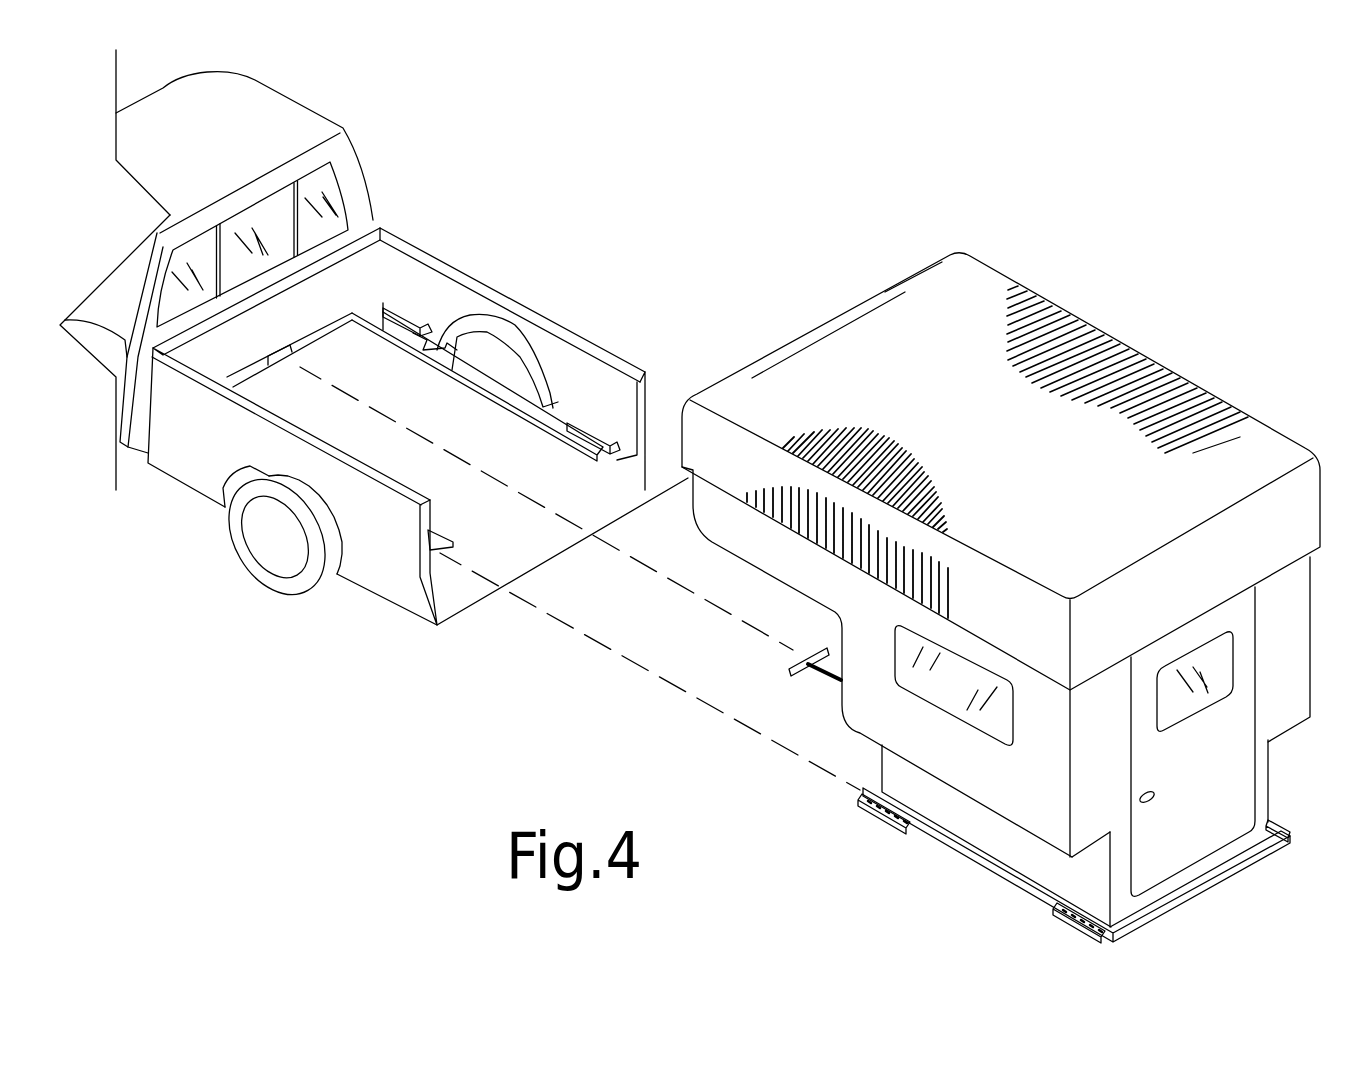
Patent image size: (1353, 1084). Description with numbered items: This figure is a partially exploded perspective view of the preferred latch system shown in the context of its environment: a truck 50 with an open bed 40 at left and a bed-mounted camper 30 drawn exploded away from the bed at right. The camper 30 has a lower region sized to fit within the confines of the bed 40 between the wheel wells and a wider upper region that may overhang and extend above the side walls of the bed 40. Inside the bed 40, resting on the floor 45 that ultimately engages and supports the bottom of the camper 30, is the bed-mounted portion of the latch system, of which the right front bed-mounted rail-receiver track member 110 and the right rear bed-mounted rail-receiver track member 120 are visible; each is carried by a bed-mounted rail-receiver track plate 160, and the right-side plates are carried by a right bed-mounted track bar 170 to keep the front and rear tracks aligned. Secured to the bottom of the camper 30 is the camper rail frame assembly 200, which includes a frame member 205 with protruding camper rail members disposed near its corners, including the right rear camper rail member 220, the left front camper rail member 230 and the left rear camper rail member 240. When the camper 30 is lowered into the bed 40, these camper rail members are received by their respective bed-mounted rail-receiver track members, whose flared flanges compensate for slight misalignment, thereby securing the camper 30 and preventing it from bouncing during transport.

The camper 30 is at (953, 290).
The bed 40 is at (617, 380).
The floor 45 is at (488, 446).
The truck 50 is at (367, 167).
The right front bed-mounted rail-receiver track member 110 is at (403, 323).
The right rear bed-mounted rail-receiver track member 120 is at (652, 425).
The bed-mounted rail-receiver track plate 160 is at (385, 327).
The right bed-mounted track bar 170 is at (452, 370).
The camper rail frame assembly 200 is at (1190, 917).
The frame member 205 is at (1223, 883).
The right rear camper rail member 220 is at (1277, 823).
The left front camper rail member 230 is at (888, 816).
The left rear camper rail member 240 is at (1057, 920).